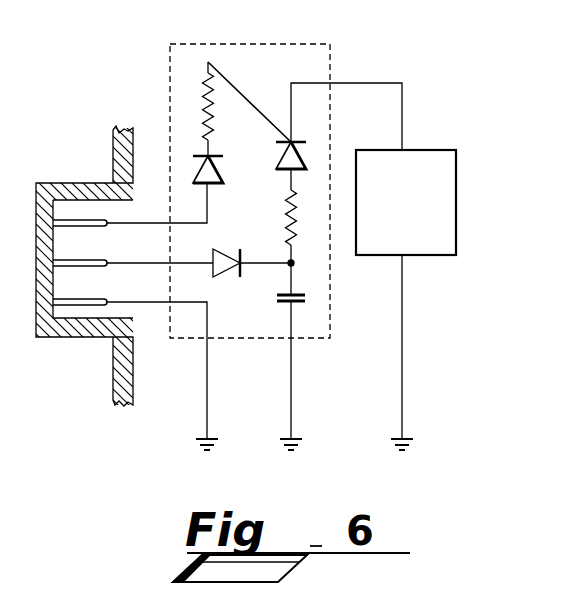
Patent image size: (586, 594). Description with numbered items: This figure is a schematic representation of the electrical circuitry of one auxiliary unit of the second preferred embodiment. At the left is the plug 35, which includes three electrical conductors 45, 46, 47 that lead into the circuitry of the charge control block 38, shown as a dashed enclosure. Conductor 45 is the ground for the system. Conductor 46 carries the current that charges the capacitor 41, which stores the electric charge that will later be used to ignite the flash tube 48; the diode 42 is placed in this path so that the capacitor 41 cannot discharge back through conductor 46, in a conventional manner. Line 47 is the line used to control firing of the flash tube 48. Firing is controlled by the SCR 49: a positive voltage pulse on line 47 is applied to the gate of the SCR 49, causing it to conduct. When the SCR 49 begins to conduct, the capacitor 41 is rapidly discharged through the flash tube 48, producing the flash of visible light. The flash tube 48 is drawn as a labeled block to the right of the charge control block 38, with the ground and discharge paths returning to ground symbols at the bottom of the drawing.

The plug 35 is at (79, 183).
The charge control block 38 is at (170, 73).
The capacitor 41 is at (273, 297).
The diode 42 is at (227, 251).
The conductor 45 is at (150, 304).
The conductor 46 is at (150, 263).
The line 47 is at (147, 223).
The flash tube 48 is at (437, 150).
The SCR 49 is at (276, 164).